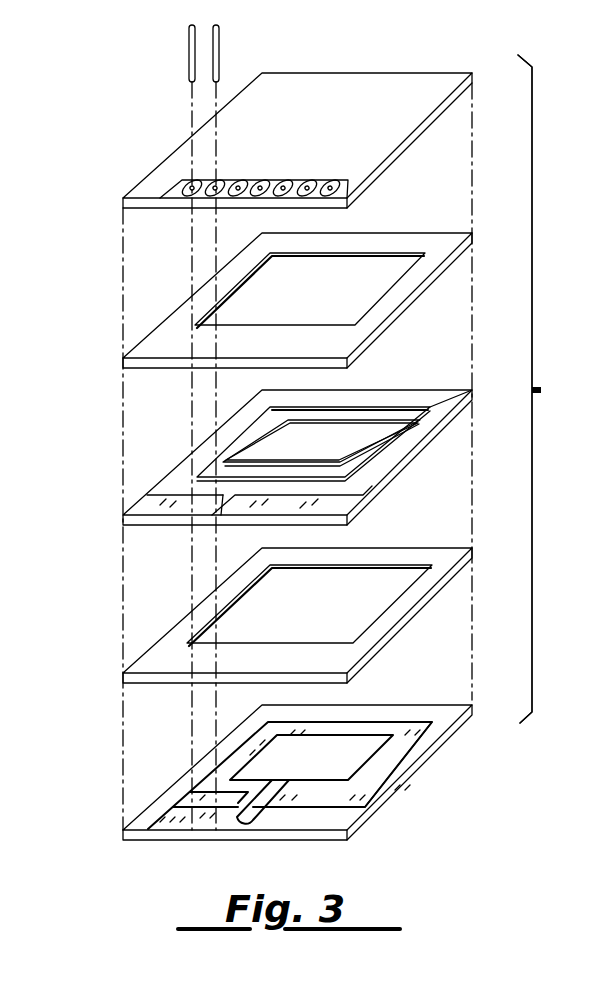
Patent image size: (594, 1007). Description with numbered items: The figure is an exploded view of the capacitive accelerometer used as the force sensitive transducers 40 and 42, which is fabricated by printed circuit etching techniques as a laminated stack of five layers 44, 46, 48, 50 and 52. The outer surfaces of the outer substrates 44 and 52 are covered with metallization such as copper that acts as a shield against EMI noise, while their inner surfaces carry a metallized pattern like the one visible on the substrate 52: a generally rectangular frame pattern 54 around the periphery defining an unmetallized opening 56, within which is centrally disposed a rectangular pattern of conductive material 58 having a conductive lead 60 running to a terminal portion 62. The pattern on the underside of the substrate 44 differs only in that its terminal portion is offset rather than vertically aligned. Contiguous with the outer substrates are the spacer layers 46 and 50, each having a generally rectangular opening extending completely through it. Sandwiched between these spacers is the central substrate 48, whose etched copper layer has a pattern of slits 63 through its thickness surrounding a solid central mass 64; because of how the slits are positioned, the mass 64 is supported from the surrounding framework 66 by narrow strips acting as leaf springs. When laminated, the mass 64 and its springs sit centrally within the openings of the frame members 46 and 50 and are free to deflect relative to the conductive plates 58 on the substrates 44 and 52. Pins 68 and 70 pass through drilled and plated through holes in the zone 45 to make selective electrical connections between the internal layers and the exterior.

The force sensitive transducer 40 is at (546, 389).
The force sensitive transducer 42 is at (547, 389).
The outer layer substrate 44 is at (158, 168).
The pin zone 45 is at (253, 178).
The spacer layer 46 is at (157, 327).
The central substrate 48 is at (160, 483).
The spacer layer 50 is at (160, 640).
The outer layer substrate 52 is at (162, 797).
The rectangular frame pattern 54 is at (400, 758).
The unmetallized opening 56 is at (360, 728).
The rectangular conductive pattern 58 is at (328, 770).
The conductive lead 60 is at (260, 813).
The terminal portion 62 is at (208, 822).
The slits 63 is at (238, 435).
The central mass 64 is at (328, 455).
The surrounding framework 66 is at (432, 398).
The pin 68 is at (188, 63).
The pin 70 is at (220, 63).